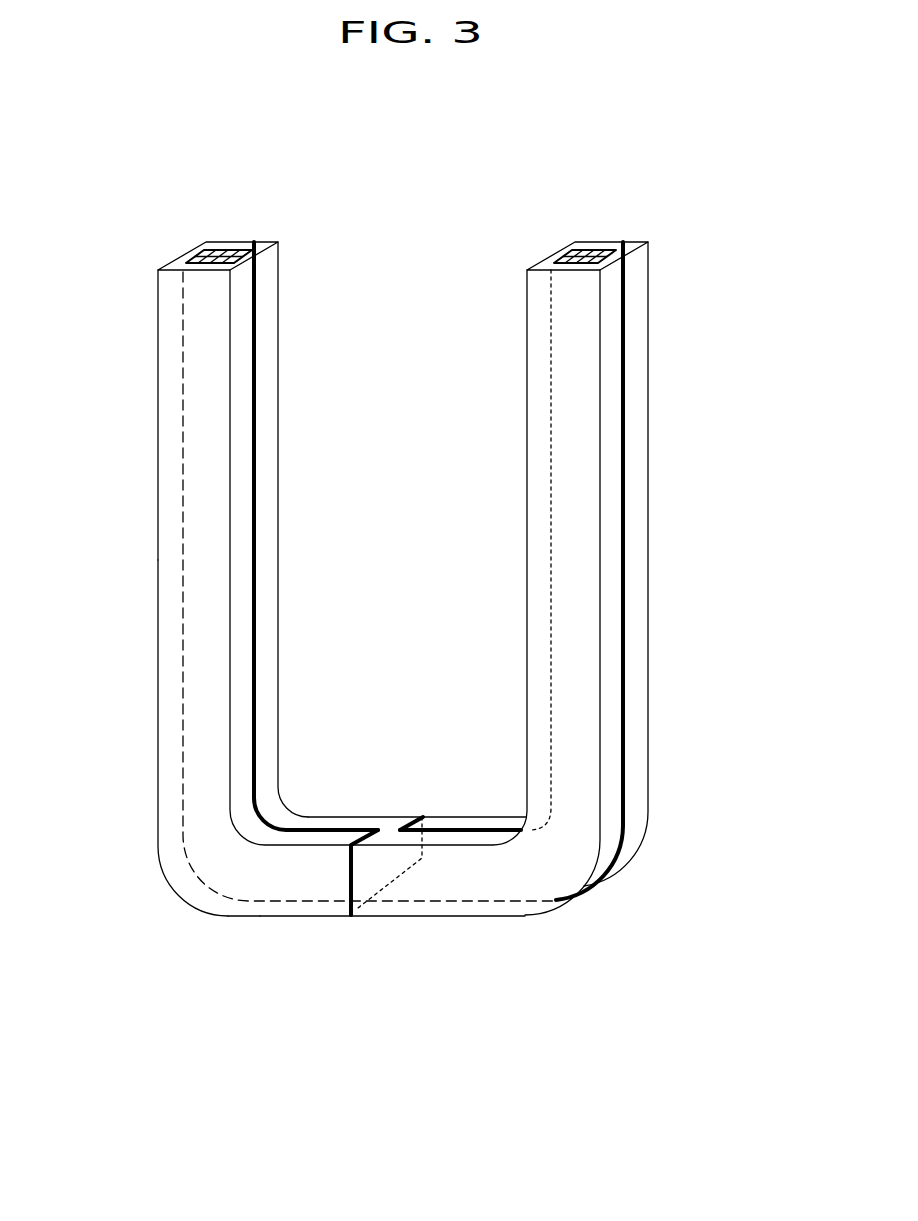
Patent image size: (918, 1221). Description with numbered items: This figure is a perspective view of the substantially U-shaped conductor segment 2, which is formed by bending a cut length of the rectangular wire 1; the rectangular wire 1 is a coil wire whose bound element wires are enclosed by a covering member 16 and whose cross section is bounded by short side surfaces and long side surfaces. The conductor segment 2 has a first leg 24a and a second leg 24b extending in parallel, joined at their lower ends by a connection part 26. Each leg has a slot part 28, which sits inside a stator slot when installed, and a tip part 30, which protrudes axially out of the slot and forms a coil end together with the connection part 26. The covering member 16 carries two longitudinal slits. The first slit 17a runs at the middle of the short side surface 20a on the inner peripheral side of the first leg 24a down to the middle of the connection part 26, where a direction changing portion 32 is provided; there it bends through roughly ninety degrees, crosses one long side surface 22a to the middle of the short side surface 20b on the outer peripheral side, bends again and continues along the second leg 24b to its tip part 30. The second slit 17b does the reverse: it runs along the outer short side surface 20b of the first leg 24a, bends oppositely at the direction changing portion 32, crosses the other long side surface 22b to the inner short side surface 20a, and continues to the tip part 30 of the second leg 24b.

The rectangular wire 1 is at (705, 285).
The conductor segment 2 is at (237, 928).
The covering member 16 is at (270, 587).
The first slit 17a is at (257, 387).
The second slit 17b is at (183, 298).
The short side surface on the inner peripheral side 20a is at (268, 260).
The short side surface on the outer peripheral side 20b is at (190, 250).
The long side surface 22a is at (210, 330).
The long side surface 22b is at (225, 241).
The first leg 24a is at (259, 232).
The second leg 24b is at (604, 231).
The connection part 26 is at (453, 920).
The slot part 28 is at (167, 637).
The tip part 30 is at (167, 363).
The direction changing portion 32 is at (397, 783).